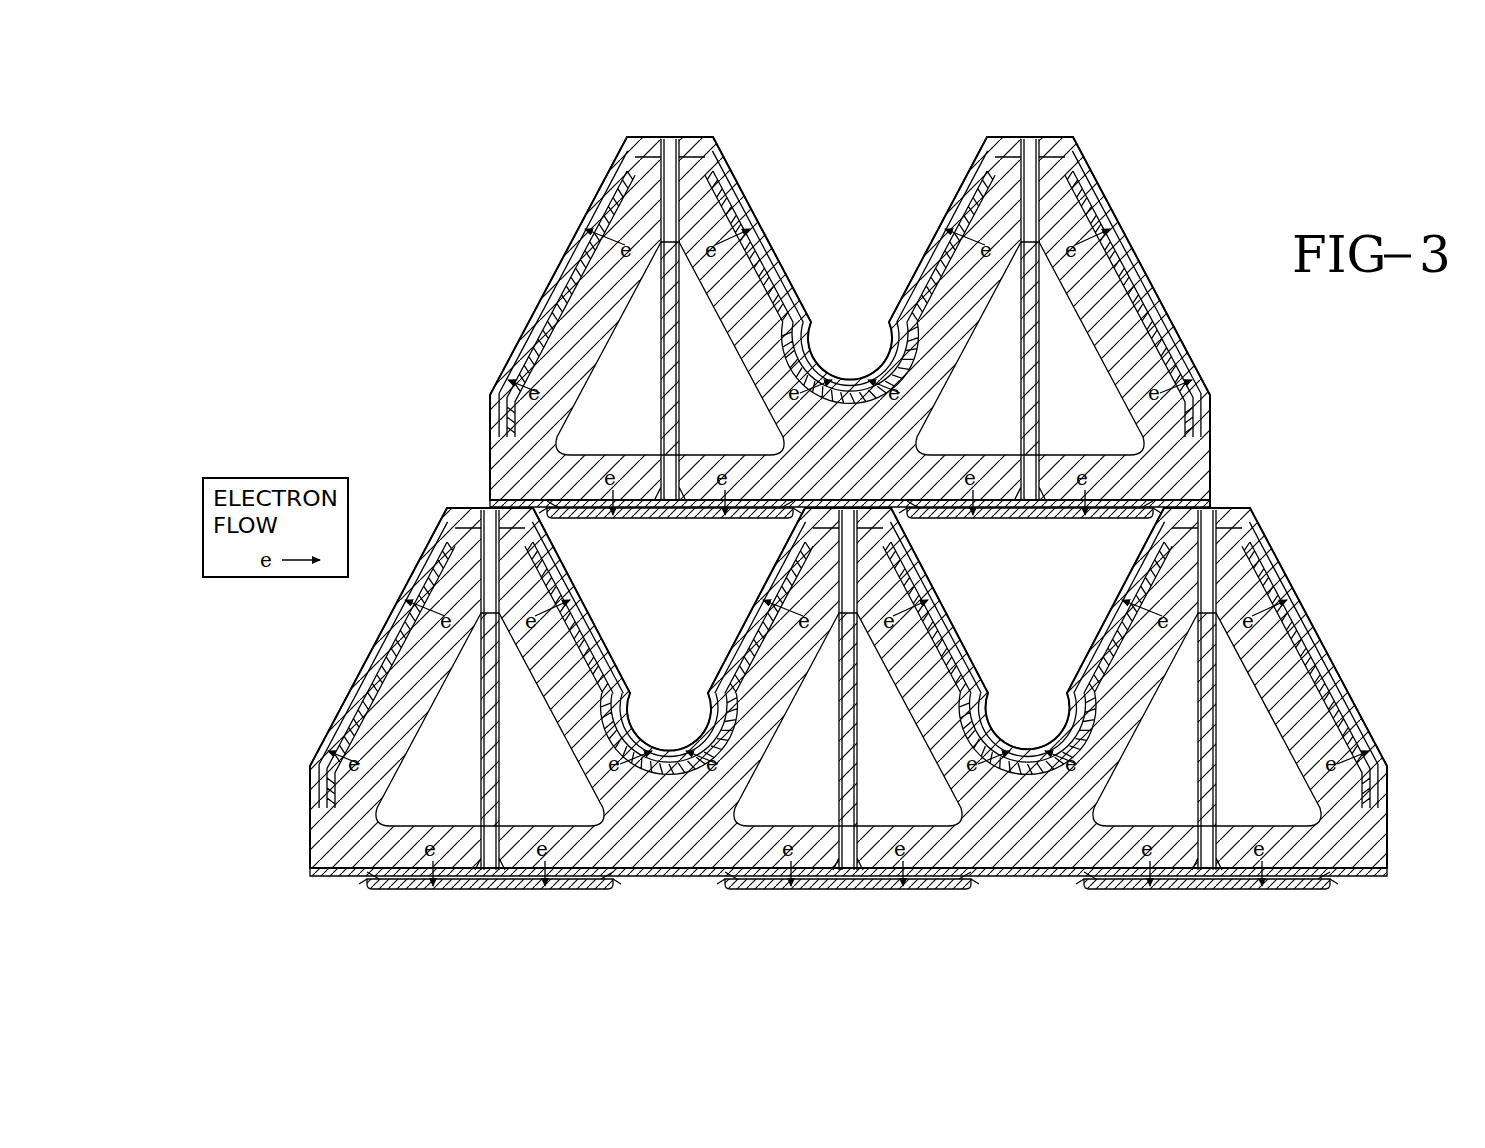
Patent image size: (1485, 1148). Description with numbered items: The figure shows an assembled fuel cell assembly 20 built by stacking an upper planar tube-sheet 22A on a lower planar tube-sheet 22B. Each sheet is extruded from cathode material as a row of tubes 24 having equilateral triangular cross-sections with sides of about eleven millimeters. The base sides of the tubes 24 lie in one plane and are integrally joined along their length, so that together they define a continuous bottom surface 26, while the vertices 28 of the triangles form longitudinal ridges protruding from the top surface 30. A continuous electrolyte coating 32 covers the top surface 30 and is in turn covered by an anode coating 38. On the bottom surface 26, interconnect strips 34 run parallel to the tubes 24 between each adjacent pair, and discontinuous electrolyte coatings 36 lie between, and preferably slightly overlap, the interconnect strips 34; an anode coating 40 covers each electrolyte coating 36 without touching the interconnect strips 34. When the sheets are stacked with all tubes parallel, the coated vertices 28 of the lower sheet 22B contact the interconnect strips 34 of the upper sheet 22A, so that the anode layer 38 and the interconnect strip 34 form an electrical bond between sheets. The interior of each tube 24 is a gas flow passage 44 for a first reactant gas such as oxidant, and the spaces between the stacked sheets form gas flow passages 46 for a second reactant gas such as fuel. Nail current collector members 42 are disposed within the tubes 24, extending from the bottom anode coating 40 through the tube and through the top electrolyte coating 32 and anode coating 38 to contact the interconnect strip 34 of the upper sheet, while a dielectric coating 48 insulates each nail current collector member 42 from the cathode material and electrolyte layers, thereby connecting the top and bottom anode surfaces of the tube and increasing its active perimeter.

The fuel cell assembly 20 is at (371, 268).
The upper planar tube-sheet 22A is at (483, 455).
The lower planar tube-sheet 22B is at (299, 836).
The tube 24 is at (593, 320).
The bottom surface 26 is at (630, 878).
The vertex 28 is at (1047, 123).
The top surface 30 is at (770, 248).
The continuous electrolyte coating 32 is at (1117, 279).
The interconnect strip 34 is at (1212, 497).
The discontinuous electrolyte coating 36 is at (630, 505).
The anode coating 38 is at (1090, 204).
The anode coating 40 is at (987, 517).
The nail current collector member 42 is at (674, 213).
The gas flow passage 44 is at (1265, 787).
The gas flow passage 46 is at (1040, 570).
The dielectric coating 48 is at (660, 347).